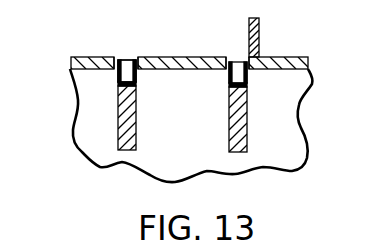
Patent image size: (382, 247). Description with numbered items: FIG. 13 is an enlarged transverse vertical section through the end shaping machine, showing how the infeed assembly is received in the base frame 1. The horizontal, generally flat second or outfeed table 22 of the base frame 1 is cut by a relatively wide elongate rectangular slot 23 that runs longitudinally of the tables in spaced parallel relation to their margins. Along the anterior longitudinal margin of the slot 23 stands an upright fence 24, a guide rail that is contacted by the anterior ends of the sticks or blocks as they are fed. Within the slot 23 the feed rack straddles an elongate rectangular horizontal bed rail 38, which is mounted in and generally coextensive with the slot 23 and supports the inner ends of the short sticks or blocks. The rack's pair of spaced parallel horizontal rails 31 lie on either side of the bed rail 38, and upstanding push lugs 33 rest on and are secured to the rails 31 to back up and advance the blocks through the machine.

The base frame 1 is at (76, 143).
The second table 22 is at (80, 57).
The wide slot 23 is at (133, 59).
The fence 24 is at (259, 35).
The rails 31 is at (136, 116).
The push lugs 33 is at (127, 59).
The bed rail 38 is at (202, 57).